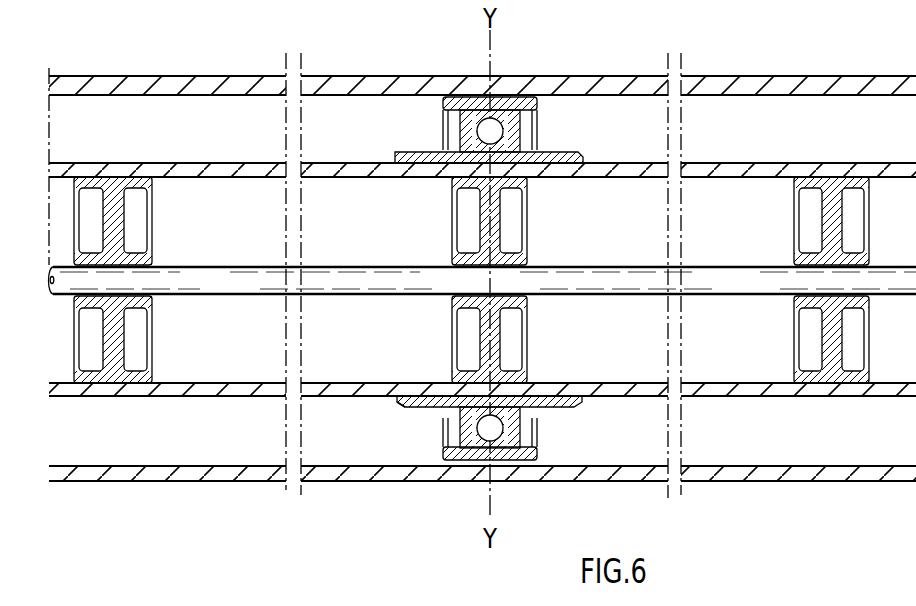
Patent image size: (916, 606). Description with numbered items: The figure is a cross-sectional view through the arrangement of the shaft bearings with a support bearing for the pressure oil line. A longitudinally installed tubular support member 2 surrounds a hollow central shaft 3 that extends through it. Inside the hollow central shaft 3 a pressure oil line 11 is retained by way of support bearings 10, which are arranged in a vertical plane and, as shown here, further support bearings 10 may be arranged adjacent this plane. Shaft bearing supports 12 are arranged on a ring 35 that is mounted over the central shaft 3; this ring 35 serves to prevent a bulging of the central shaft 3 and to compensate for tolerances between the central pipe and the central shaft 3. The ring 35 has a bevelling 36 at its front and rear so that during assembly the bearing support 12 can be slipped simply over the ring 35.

The tubular support member 2 is at (637, 78).
The central shaft 3 is at (648, 163).
The support bearing 10 is at (125, 247).
The pressure oil line 11 is at (637, 262).
The bearing support 12 is at (512, 136).
The ring 35 is at (560, 407).
The bevelling 36 is at (406, 410).